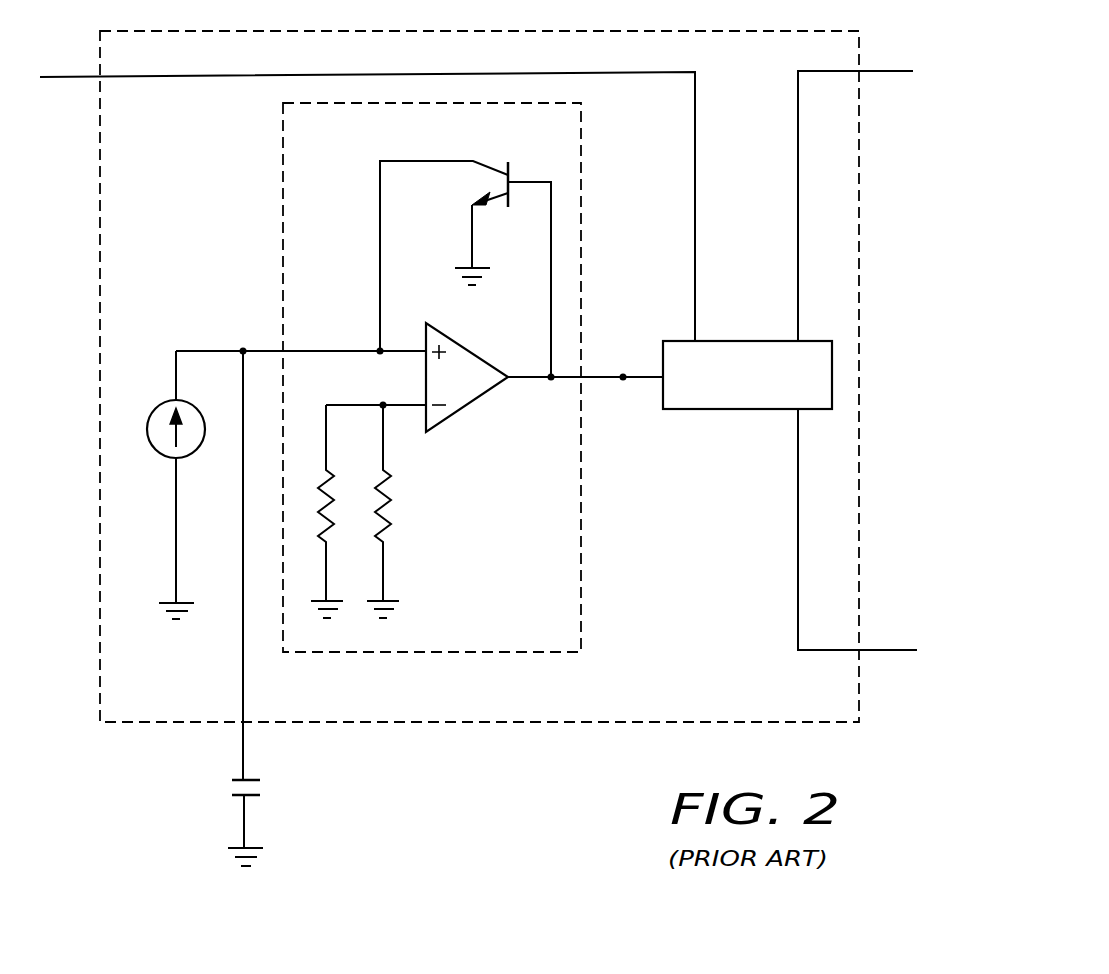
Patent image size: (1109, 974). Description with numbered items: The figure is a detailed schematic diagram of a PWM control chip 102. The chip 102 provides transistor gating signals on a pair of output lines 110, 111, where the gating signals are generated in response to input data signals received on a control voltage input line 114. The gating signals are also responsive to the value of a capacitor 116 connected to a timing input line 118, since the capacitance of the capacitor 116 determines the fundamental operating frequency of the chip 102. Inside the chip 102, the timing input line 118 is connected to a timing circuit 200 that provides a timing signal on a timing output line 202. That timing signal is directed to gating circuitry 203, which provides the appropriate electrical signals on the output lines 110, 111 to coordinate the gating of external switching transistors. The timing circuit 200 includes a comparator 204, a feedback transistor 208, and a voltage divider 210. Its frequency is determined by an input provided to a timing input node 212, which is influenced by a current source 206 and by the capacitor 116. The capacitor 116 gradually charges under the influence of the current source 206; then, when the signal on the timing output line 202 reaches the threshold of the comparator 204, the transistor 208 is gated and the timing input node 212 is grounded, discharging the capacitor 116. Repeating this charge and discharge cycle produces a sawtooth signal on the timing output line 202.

The PWM control chip 102 is at (747, 721).
The output line 110 is at (885, 70).
The output line 111 is at (893, 652).
The control voltage input line 114 is at (70, 76).
The capacitor 116 is at (237, 796).
The timing input line 118 is at (243, 752).
The timing circuit 200 is at (560, 652).
The timing output line 202 is at (623, 374).
The gating circuitry 203 is at (755, 410).
The comparator 204 is at (470, 410).
The current source 206 is at (155, 412).
The feedback transistor 208 is at (488, 165).
The voltage divider 210 is at (405, 507).
The timing input node 212 is at (242, 347).